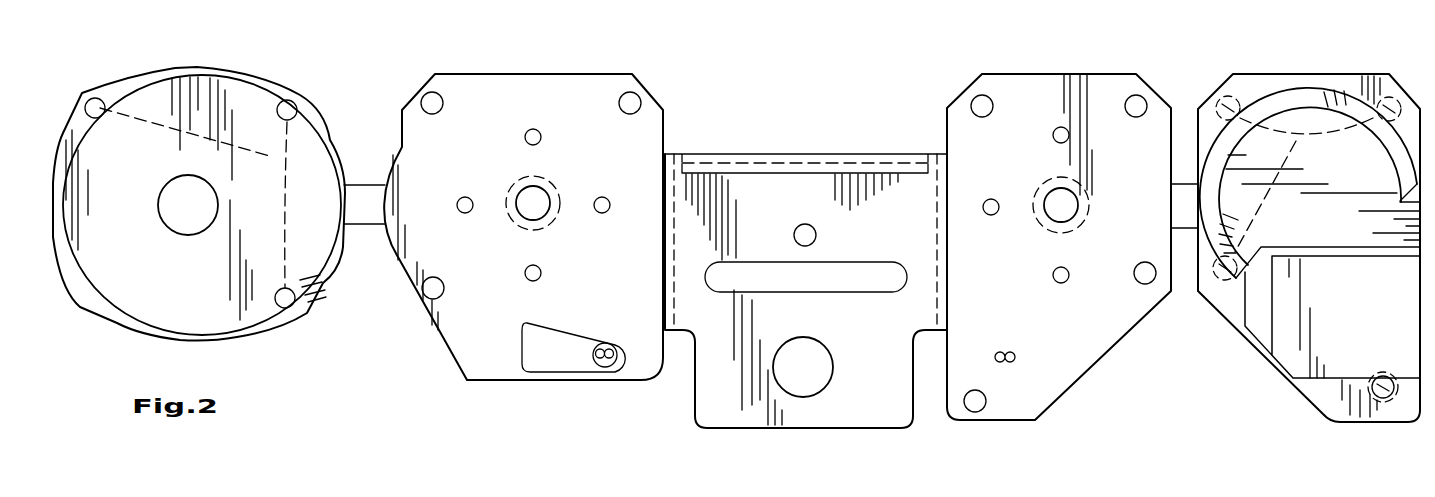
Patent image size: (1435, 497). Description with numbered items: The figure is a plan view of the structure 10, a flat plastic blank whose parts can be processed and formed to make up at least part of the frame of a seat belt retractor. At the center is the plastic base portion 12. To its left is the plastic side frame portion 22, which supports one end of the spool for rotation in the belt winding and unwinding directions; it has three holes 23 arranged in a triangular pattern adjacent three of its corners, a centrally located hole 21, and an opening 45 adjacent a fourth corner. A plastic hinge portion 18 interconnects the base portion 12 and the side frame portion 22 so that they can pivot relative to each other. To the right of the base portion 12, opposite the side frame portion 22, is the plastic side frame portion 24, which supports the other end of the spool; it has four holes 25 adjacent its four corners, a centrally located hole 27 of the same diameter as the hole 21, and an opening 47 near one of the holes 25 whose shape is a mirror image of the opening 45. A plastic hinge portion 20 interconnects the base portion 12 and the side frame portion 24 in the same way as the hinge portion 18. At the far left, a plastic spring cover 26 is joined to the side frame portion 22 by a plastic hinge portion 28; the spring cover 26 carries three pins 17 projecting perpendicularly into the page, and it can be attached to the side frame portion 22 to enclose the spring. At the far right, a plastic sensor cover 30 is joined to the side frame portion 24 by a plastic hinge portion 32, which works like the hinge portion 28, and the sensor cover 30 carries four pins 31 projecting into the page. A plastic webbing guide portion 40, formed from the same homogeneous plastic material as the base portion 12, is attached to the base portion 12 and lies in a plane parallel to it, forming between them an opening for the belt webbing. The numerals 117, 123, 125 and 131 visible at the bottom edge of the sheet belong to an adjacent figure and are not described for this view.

The structure 10 is at (402, 377).
The base portion 12 is at (718, 408).
The pins 17 is at (192, 203).
The hinge portion 18 is at (670, 330).
The hinge portion 20 is at (942, 323).
The hole 21 is at (540, 205).
The side frame portion 22 is at (640, 358).
The holes 23 is at (436, 105).
The side frame portion 24 is at (1017, 408).
The holes 25 is at (1132, 107).
The spring cover 26 is at (257, 302).
The hole 27 is at (1085, 197).
The hinge portion 28 is at (362, 218).
The sensor cover 30 is at (1289, 363).
The pins 31 is at (1392, 450).
The hinge portion 32 is at (1181, 225).
The webbing guide portion 40 is at (772, 167).
The opening 45 is at (600, 345).
The opening 47 is at (1017, 357).
The numeral of adjacent figure 117 is at (160, 496).
The numeral of adjacent figure 123 is at (551, 488).
The numeral of adjacent figure 125 is at (1040, 496).
The numeral of adjacent figure 131 is at (1296, 489).